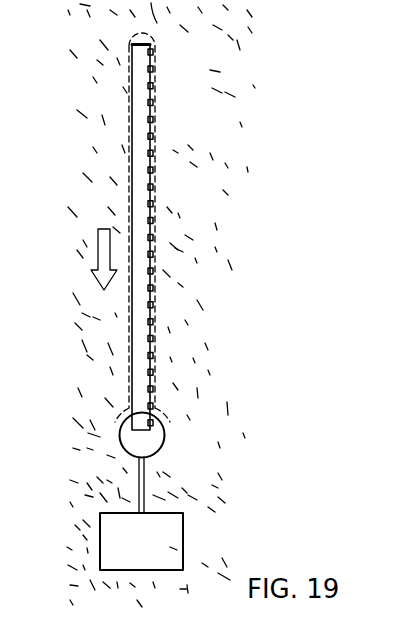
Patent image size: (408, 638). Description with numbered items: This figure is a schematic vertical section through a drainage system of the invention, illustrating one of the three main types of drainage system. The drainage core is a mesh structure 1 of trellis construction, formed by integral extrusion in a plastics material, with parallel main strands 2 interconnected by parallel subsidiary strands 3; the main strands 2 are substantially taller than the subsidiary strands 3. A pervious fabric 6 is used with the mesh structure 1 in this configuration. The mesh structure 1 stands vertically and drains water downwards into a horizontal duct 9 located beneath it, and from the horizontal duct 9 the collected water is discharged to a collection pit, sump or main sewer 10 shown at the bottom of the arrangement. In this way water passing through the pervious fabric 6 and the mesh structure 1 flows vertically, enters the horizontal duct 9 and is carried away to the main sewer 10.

The mesh structure 1 is at (152, 106).
The main strands 2 is at (137, 80).
The subsidiary strands 3 is at (153, 134).
The pervious fabric 6 is at (155, 170).
The horizontal duct 9 is at (158, 443).
The main sewer 10 is at (175, 548).